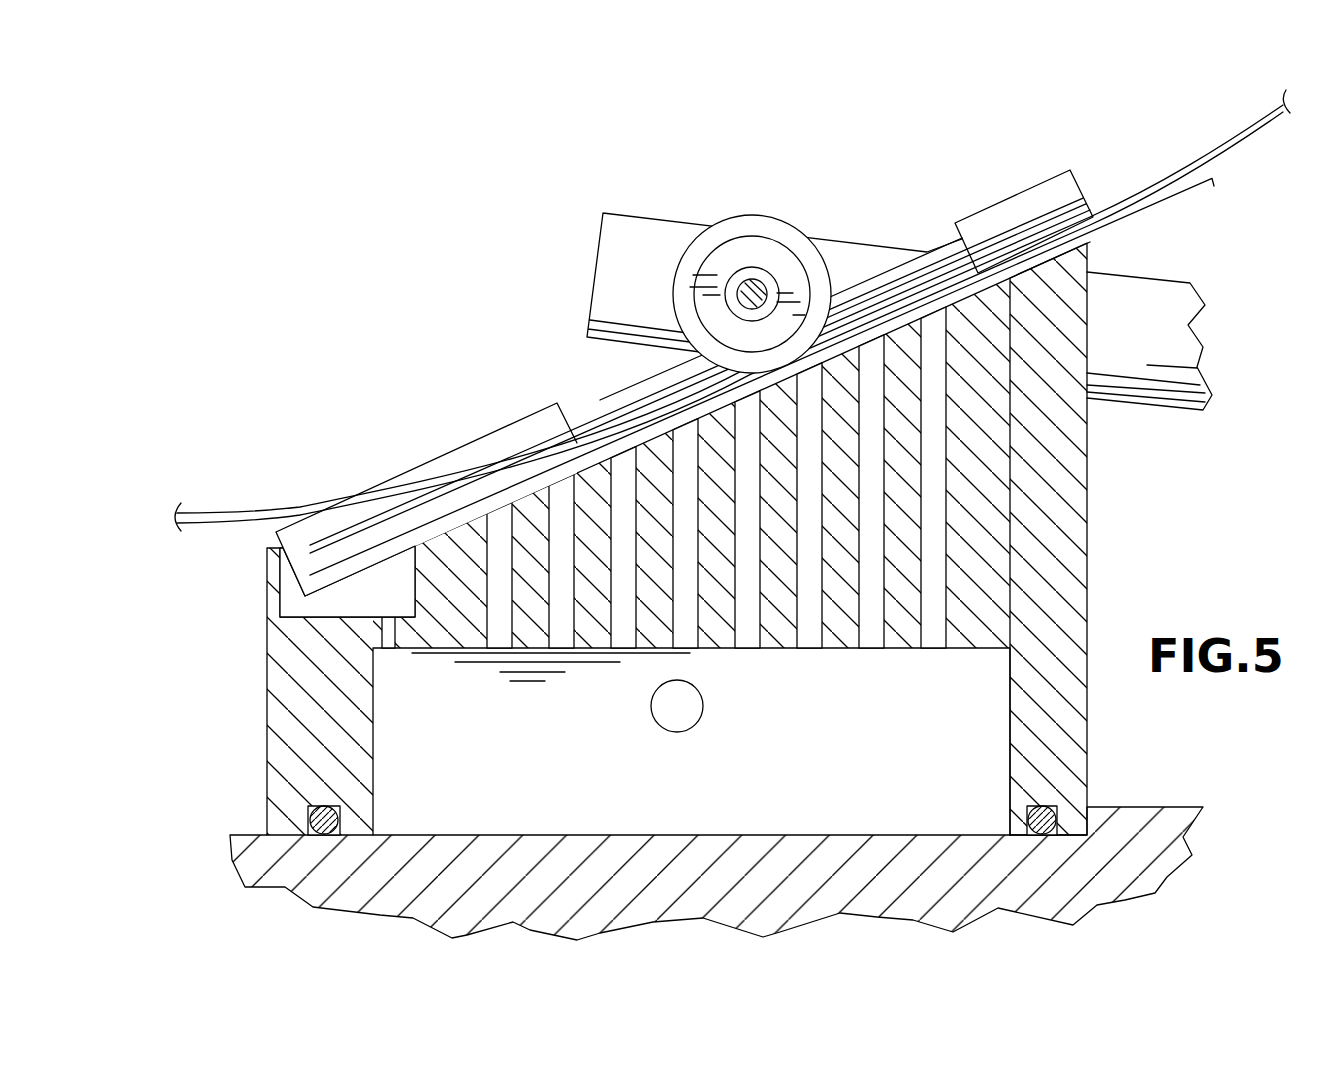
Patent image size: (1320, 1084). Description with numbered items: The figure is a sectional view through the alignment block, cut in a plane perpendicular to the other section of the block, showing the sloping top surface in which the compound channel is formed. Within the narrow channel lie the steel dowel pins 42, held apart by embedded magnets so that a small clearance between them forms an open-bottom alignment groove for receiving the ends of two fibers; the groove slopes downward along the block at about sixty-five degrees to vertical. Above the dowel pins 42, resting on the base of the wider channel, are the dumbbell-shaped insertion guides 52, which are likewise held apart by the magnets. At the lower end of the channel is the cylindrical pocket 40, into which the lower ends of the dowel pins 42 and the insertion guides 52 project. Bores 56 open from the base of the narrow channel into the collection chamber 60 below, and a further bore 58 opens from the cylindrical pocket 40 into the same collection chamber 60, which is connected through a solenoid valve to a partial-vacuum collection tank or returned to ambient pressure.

The cylindrical pocket 40 is at (293, 602).
The dowel pins 42 is at (1197, 203).
The insertion guides 52 is at (1032, 187).
The bores 56 is at (748, 648).
The bore 58 is at (390, 648).
The collection chamber 60 is at (830, 752).